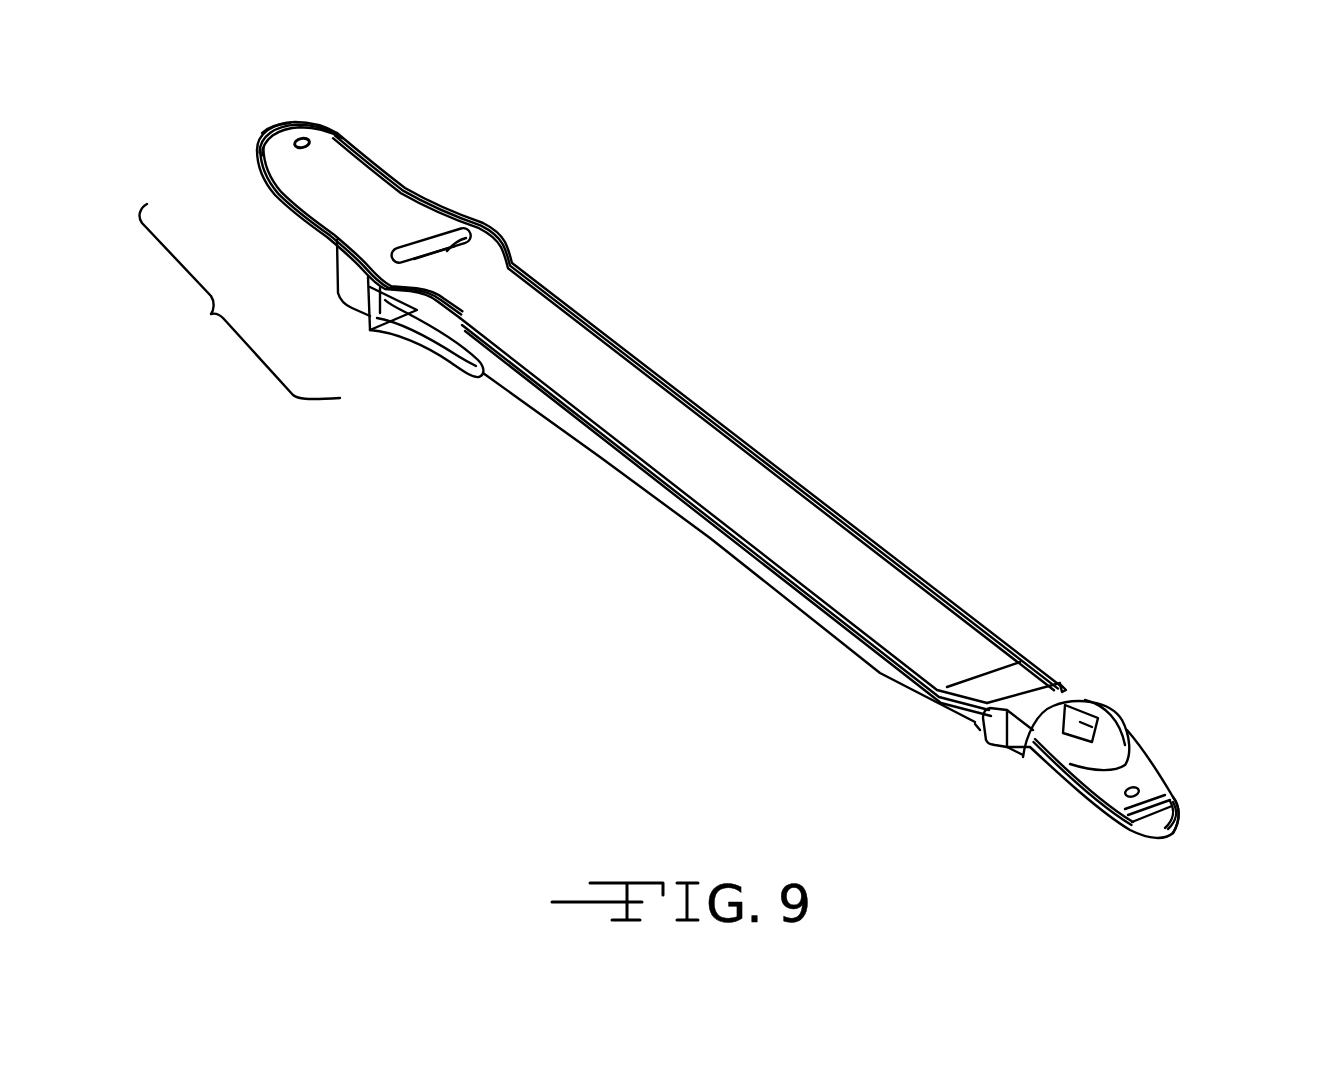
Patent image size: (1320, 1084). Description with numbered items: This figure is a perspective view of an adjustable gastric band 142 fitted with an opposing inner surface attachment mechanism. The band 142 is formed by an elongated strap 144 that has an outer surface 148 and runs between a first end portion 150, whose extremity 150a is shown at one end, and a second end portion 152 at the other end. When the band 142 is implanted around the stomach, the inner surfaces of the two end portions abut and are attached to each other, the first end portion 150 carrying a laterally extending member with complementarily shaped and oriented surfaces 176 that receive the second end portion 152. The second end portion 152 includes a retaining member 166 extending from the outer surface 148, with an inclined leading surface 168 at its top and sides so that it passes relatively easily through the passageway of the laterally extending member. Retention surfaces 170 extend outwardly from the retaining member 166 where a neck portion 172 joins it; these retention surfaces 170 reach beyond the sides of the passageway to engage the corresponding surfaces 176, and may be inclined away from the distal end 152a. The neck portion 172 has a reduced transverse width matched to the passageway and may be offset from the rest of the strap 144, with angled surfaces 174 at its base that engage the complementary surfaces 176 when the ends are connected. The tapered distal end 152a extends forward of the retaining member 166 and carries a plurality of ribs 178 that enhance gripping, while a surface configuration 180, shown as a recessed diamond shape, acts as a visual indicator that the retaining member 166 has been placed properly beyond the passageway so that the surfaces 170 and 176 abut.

The adjustable gastric band 142 is at (397, 628).
The elongated strap 144 is at (767, 455).
The outer surface 148 is at (697, 427).
The first end portion 150 is at (240, 301).
The first end portion end 150a is at (272, 130).
The second end portion 152 is at (1048, 895).
The distal end 152a is at (1166, 838).
The retaining member 166 is at (1120, 724).
The inclined leading surface 168 is at (1112, 757).
The retention surfaces 170 is at (1090, 728).
The neck portion 172 is at (1035, 698).
The angled surfaces 174 is at (1063, 688).
The complementary surfaces 176 is at (368, 327).
The ribs 178 is at (1165, 796).
The surface configuration 180 is at (1122, 722).